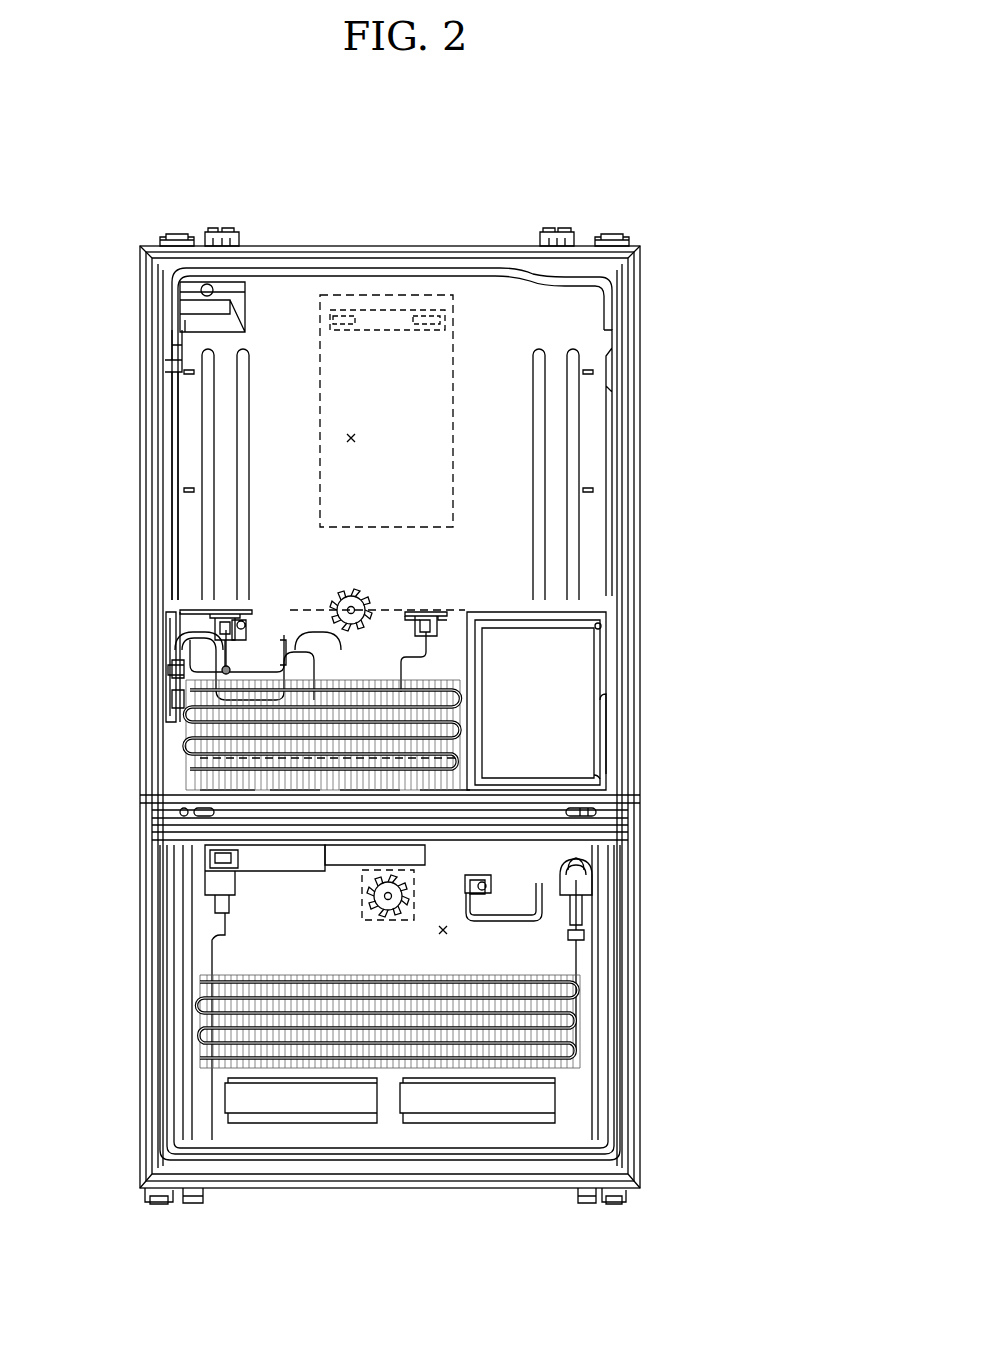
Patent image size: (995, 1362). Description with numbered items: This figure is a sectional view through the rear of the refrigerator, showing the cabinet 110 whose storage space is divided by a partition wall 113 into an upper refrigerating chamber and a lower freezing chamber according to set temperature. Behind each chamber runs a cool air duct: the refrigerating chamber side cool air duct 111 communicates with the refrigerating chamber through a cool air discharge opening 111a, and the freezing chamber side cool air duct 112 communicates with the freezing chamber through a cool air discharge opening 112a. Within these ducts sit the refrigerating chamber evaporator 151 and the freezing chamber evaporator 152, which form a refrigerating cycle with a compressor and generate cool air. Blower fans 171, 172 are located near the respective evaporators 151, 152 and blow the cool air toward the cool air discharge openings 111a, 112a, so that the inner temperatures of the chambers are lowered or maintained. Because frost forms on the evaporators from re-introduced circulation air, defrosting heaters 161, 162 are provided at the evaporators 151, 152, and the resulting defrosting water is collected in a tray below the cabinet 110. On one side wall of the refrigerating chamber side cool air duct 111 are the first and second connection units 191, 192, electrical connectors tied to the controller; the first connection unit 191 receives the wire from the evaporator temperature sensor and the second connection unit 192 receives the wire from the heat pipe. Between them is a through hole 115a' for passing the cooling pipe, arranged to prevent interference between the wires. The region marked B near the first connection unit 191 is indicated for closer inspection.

The cabinet 110 is at (633, 300).
The refrigerating chamber side cool air duct 111 is at (351, 438).
The cool air discharge opening 111a is at (432, 318).
The freezing chamber side cool air duct 112 is at (450, 930).
The cool air discharge opening 112a is at (440, 858).
The partition wall 113 is at (552, 805).
The through hole 115a' is at (460, 678).
The refrigerating chamber evaporator 151 is at (188, 706).
The freezing chamber evaporator 152 is at (582, 998).
The defrosting heater 161 is at (195, 768).
The defrosting heater 162 is at (578, 1062).
The blower fan 171 is at (340, 605).
The blower fan 172 is at (405, 894).
The first connection unit 191 is at (240, 622).
The second connection unit 192 is at (430, 628).
The portion B is at (170, 625).